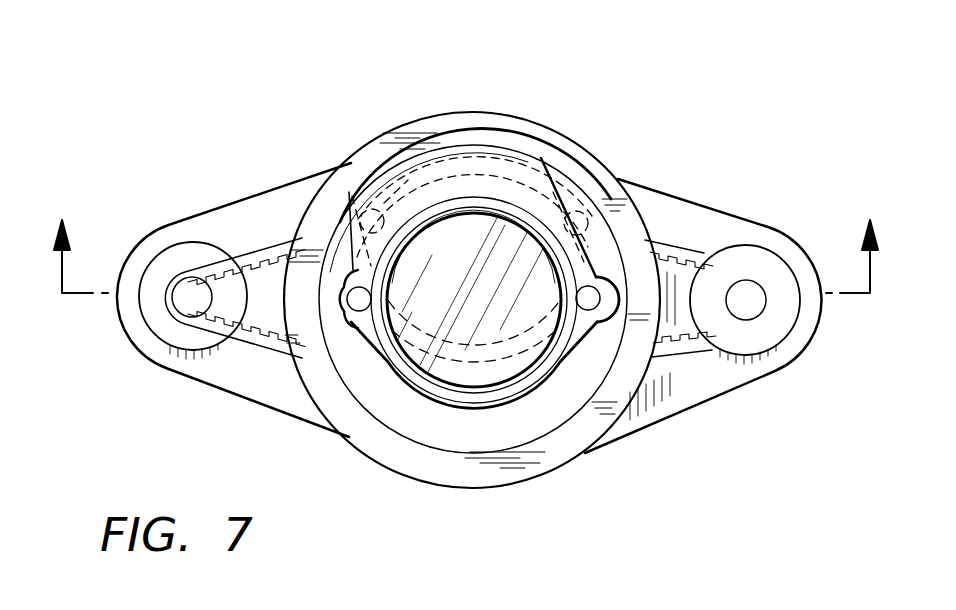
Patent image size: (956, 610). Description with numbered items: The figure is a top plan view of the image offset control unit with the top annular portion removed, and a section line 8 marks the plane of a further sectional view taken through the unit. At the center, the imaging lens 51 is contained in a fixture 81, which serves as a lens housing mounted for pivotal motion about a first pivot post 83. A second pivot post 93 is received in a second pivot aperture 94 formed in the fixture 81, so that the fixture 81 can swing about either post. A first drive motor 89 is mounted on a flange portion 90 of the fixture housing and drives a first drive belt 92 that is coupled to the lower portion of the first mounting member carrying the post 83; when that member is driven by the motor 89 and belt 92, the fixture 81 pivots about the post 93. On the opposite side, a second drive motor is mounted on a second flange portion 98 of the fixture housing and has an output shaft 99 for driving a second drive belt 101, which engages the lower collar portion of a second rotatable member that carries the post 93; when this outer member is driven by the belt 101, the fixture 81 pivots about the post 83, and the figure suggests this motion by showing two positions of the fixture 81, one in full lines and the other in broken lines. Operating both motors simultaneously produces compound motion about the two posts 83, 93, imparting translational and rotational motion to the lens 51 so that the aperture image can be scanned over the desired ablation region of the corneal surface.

The section line 8- 8 is at (468, 233).
The imaging lens 51 is at (453, 232).
The fixture 81 is at (548, 233).
The first pivot post 83 is at (598, 275).
The first drive motor 89 is at (767, 327).
The flange portion 90 is at (740, 370).
The first drive belt 92 is at (695, 253).
The second pivot post 93 is at (360, 308).
The second pivot aperture 94 is at (358, 287).
The second flange portion 98 is at (215, 373).
The output shaft 99 is at (188, 297).
The second drive belt 101 is at (250, 251).